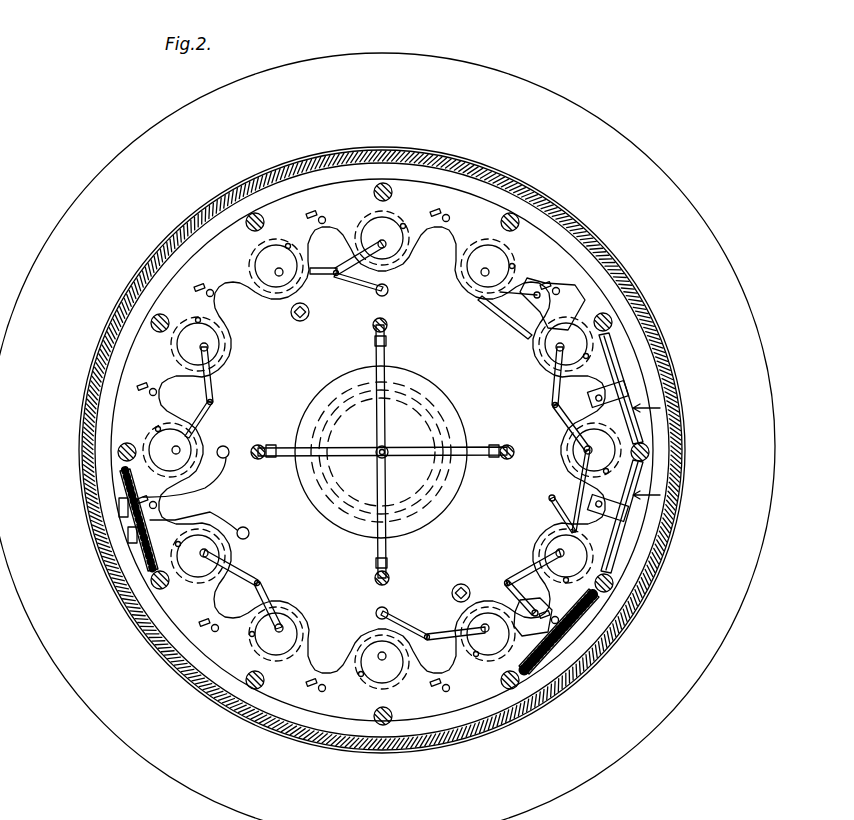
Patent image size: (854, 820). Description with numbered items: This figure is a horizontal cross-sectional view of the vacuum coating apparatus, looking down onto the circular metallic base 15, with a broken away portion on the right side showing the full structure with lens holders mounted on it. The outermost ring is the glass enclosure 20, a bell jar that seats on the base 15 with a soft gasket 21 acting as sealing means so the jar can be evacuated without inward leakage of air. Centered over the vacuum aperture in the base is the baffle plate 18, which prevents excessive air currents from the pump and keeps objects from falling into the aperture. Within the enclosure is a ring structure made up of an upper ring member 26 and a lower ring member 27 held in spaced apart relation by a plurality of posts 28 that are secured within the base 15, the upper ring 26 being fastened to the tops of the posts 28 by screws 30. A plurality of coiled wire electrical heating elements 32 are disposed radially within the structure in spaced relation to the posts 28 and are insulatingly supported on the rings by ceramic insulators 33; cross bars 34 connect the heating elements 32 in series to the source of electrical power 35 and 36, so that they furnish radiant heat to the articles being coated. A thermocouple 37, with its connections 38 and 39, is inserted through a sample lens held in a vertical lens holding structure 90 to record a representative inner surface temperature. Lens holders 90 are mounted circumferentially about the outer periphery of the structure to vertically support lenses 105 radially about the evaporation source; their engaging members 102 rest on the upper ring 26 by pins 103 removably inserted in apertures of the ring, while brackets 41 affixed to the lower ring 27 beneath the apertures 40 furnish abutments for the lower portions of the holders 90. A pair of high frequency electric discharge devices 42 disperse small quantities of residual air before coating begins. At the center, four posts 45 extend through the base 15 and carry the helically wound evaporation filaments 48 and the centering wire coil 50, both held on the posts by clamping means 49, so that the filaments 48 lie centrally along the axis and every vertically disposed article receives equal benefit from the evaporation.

The circular metallic base 15 is at (672, 694).
The baffle plate 18 is at (330, 393).
The glass enclosure 20 is at (614, 640).
The soft gasket 21 is at (644, 626).
The upper ring member 26 is at (553, 538).
The lower ring member 27 is at (300, 672).
The supports or posts 28 is at (502, 220).
The screws 30 is at (614, 320).
The coiled wire electrical heating elements 32 is at (490, 270).
The ceramic insulators 33 is at (270, 262).
The cross bars 34 is at (325, 275).
The source of electrical power 35 is at (389, 289).
The source of electrical power 36 is at (389, 611).
The thermocouple 37 is at (136, 523).
The thermocouple connection 38 is at (227, 458).
The thermocouple connection 39 is at (248, 528).
The apertures 40 is at (498, 312).
The brackets 41 is at (443, 214).
The high frequency electric discharge devices 42 is at (290, 313).
The posts 45 is at (388, 322).
The evaporation filaments 48 is at (411, 448).
The clamping means 49 is at (498, 446).
The wire coil 50 is at (362, 452).
The lens holders 90 is at (100, 587).
The engaging members 102 is at (628, 396).
The pins 103 is at (552, 405).
The lenses 105 is at (548, 652).